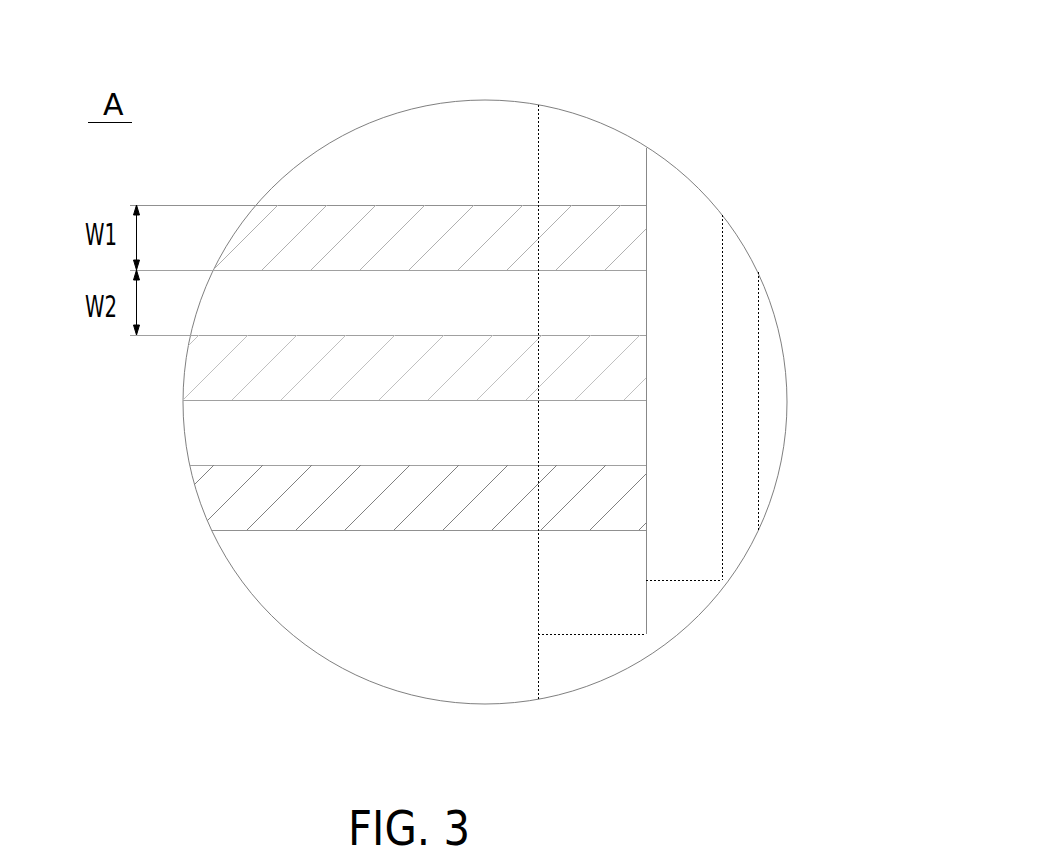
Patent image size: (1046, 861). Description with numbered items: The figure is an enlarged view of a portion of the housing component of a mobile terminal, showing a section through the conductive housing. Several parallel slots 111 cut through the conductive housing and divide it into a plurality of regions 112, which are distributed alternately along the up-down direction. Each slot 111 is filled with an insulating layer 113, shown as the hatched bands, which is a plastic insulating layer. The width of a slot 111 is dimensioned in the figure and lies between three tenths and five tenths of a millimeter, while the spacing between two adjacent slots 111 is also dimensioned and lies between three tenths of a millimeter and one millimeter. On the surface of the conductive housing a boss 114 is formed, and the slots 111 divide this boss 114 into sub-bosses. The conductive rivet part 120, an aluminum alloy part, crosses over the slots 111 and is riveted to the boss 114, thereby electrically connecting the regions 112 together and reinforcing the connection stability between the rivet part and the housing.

The slot 111 is at (278, 101).
The regions 112 is at (820, 234).
The insulating layer 113 is at (792, 148).
The boss 114 is at (712, 722).
The conductive rivet part 120 is at (758, 413).